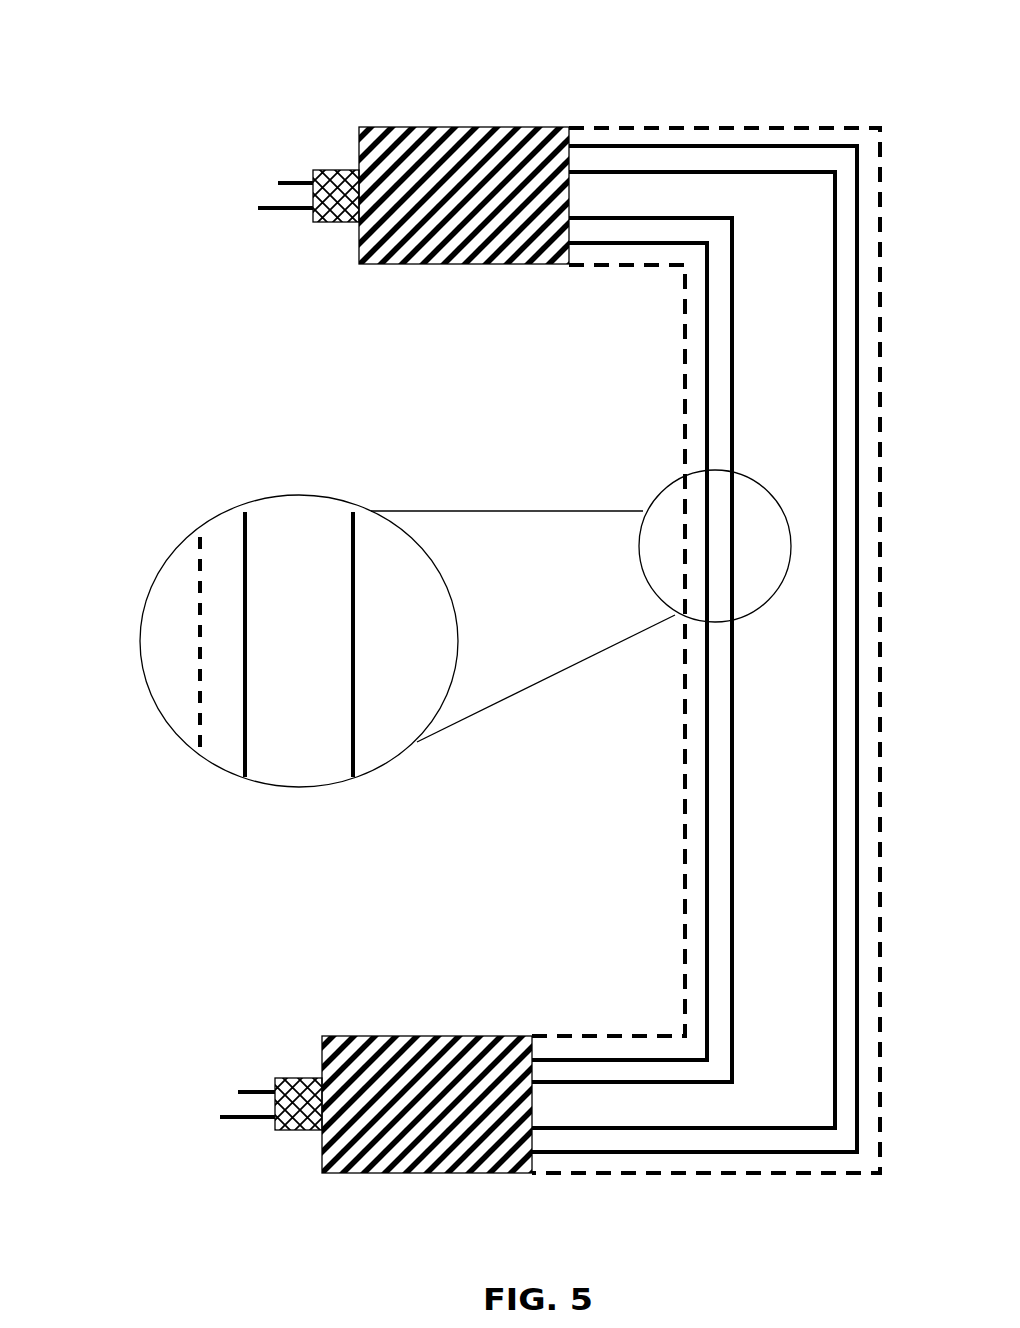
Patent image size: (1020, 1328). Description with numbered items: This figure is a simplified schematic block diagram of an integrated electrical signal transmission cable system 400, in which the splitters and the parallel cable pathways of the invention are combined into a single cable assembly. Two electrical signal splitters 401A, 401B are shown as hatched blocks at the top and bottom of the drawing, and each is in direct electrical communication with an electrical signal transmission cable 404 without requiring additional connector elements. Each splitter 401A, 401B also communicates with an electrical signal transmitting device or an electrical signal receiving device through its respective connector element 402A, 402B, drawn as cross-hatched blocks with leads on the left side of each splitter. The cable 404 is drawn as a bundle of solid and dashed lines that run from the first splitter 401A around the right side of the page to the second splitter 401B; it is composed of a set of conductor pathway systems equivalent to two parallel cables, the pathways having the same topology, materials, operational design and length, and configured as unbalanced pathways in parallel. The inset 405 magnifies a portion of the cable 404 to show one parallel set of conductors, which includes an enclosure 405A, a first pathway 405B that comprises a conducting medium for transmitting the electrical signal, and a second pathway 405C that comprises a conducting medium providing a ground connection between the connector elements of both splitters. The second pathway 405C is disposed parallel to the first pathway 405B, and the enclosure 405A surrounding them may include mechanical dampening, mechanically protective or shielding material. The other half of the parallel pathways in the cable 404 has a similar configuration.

The integrated electrical signal transmission cable system 400 is at (138, 56).
The electrical signal splitter 401A is at (433, 118).
The electrical signal splitter 401B is at (412, 1023).
The connector element 402A is at (334, 224).
The connector element 402B is at (298, 1078).
The electrical signal transmission cable 404 is at (675, 745).
The inset 405 is at (427, 658).
The enclosure 405A is at (197, 695).
The first pathway 405B is at (242, 741).
The second pathway 405C is at (350, 742).